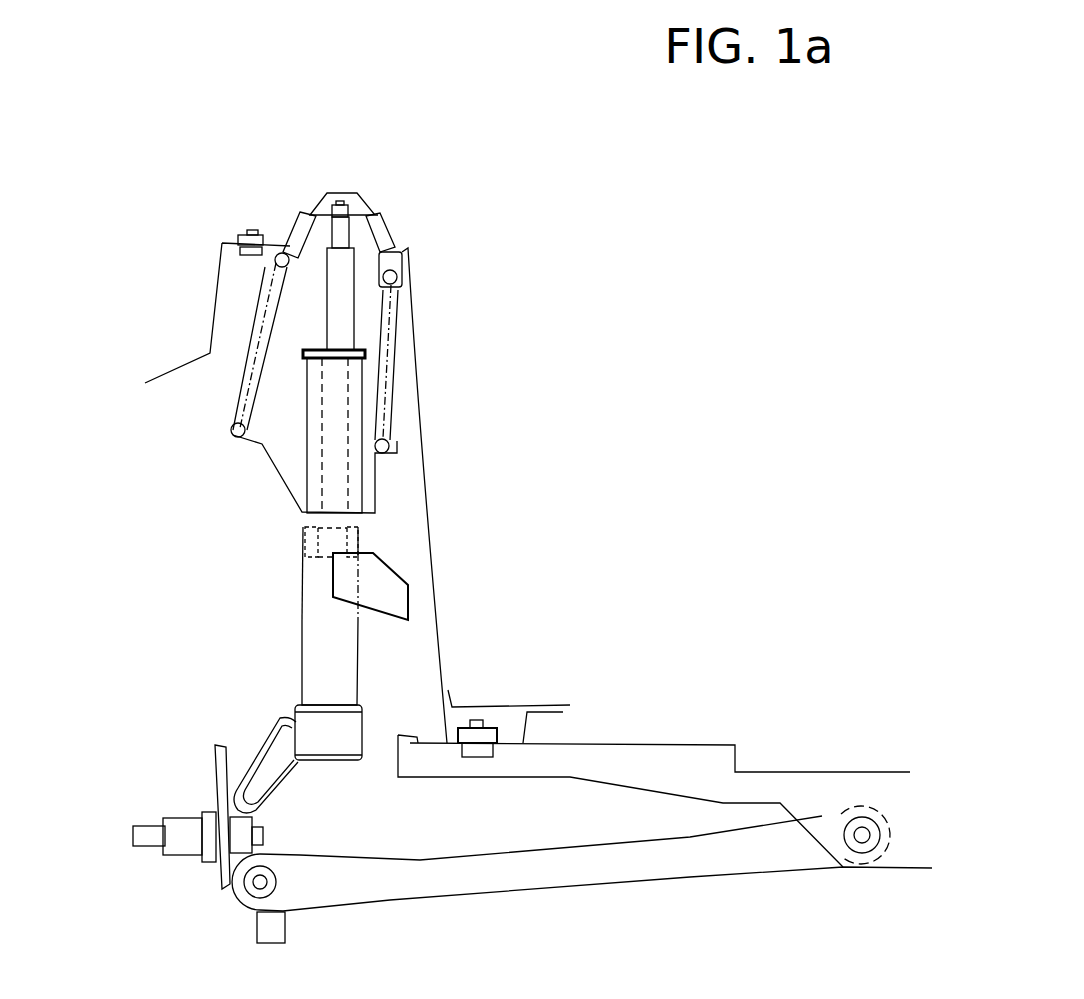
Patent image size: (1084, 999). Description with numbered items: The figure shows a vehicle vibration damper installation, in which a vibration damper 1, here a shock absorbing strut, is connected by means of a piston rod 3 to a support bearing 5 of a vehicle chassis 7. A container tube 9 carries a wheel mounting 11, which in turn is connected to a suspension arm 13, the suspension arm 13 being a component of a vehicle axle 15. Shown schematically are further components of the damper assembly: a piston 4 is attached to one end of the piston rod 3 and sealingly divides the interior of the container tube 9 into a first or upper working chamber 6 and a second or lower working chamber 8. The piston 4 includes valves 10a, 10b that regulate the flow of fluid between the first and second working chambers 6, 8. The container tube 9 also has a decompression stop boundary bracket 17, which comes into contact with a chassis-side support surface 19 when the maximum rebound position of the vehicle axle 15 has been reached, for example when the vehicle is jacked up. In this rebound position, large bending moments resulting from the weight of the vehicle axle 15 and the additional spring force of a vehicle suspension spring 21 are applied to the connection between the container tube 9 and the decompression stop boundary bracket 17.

The vibration damper 1 is at (242, 467).
The piston rod 3 is at (340, 320).
The piston 4 is at (318, 535).
The support bearing 5 is at (388, 233).
The first working chamber 6 is at (360, 540).
The vehicle chassis 7 is at (413, 315).
The second working chamber 8 is at (348, 638).
The container tube 9 is at (312, 575).
The valve 10a is at (307, 550).
The valve 10b is at (348, 475).
The wheel mounting 11 is at (257, 745).
The suspension arm 13 is at (575, 872).
The vehicle axle 15 is at (162, 882).
The decompression stop boundary bracket 17 is at (395, 595).
The chassis-side support surface 19 is at (413, 730).
The vehicle suspension spring 21 is at (233, 412).